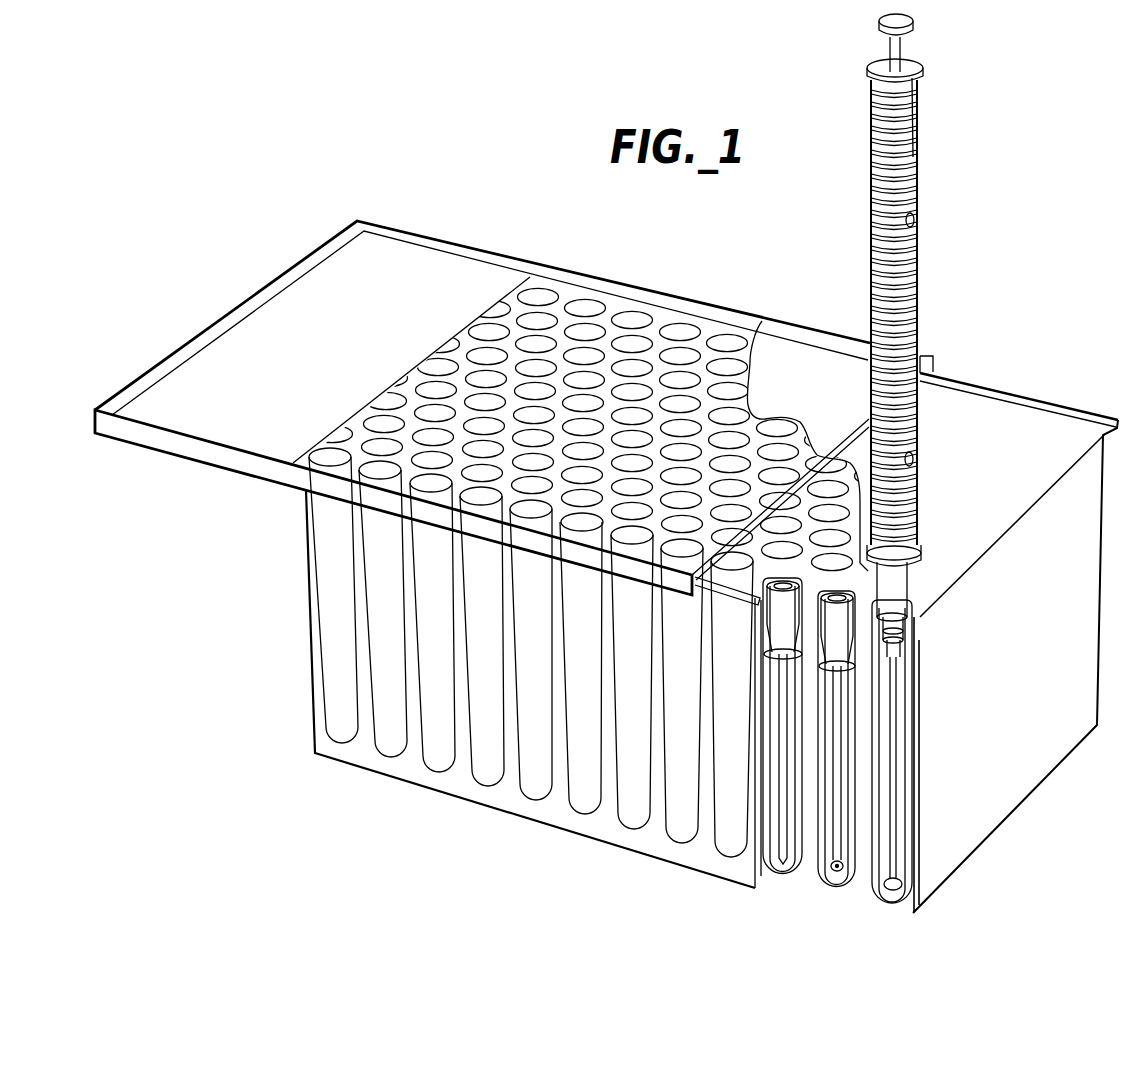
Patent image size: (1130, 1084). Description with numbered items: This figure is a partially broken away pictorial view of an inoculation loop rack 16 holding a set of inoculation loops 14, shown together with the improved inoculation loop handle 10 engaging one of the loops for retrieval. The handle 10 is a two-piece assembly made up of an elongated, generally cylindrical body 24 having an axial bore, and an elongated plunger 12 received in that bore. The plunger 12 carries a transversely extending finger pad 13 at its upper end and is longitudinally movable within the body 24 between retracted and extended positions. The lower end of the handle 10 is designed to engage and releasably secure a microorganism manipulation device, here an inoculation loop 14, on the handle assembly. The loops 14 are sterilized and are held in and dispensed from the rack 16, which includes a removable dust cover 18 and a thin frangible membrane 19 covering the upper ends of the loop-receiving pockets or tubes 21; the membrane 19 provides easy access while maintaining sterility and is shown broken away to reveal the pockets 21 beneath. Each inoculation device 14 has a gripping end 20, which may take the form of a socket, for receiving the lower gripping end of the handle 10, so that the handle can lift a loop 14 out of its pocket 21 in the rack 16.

The inoculation loop handle 10 is at (908, 334).
The plunger 12 is at (910, 47).
The finger pad 13 is at (888, 14).
The inoculation loop 14 is at (874, 874).
The inoculation loop rack 16 is at (494, 826).
The dust cover 18 is at (278, 483).
The frangible membrane 19 is at (783, 362).
The gripping end 20 is at (848, 623).
The loop-receiving pockets 21 is at (633, 319).
The body 24 is at (870, 200).